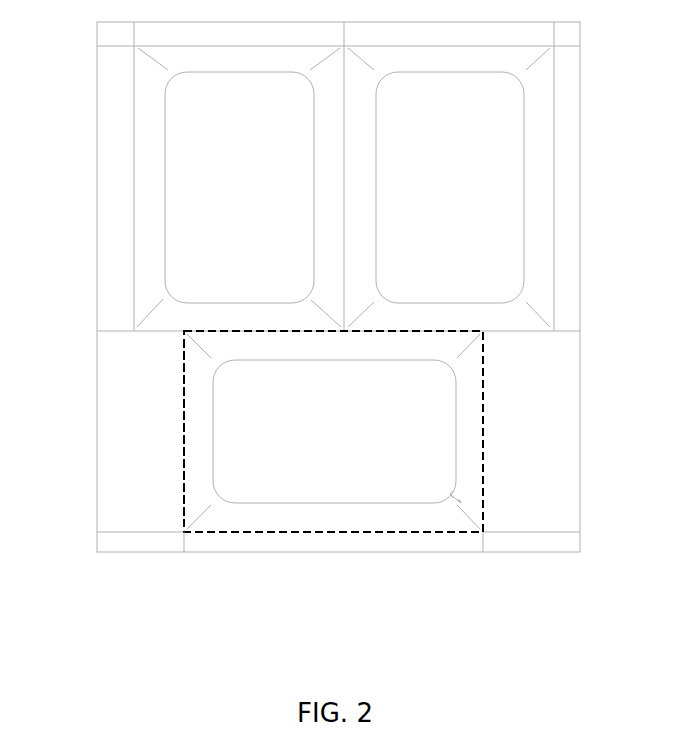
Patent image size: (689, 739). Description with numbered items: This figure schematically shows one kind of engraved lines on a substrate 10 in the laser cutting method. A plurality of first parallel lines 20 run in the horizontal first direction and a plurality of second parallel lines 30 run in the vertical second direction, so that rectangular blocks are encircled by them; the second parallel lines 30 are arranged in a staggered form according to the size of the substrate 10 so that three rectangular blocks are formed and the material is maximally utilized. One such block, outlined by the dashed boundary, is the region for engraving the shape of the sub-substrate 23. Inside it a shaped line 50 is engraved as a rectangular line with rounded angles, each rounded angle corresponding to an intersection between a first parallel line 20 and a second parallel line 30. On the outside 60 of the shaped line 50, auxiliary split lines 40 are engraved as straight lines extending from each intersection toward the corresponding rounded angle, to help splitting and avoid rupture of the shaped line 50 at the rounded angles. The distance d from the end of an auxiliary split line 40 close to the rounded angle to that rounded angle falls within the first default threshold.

The substrate 10 is at (532, 539).
The first parallel line 20 is at (230, 532).
The region for engraving the shape of sub-substrate 23 is at (490, 438).
The second parallel line 30 is at (184, 435).
The auxiliary split line 40 is at (184, 527).
The shaped line 50 is at (400, 502).
The outside of shaped line 60 is at (300, 515).
The distance d is at (459, 491).